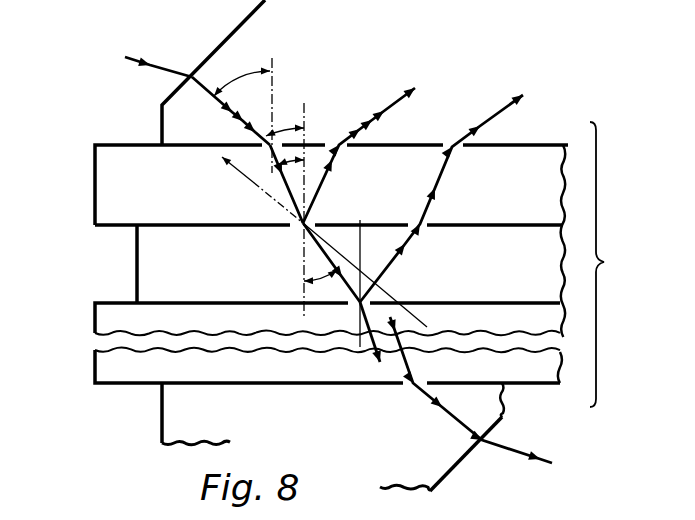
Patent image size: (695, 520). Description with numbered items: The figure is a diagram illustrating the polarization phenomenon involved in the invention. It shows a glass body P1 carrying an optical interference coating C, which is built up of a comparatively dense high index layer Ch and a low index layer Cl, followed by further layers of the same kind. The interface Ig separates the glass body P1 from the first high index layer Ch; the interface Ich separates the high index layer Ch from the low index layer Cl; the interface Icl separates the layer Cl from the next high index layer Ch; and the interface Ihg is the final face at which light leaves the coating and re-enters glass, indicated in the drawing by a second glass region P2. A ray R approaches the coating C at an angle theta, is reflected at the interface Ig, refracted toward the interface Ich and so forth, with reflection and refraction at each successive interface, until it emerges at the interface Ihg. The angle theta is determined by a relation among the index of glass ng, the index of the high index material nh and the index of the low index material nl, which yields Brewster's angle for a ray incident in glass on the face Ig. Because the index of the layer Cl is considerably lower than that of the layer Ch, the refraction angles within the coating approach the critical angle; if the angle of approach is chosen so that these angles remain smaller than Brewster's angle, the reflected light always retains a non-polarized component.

The ray R is at (179, 68).
The index of glass ng is at (333, 245).
The index of high index material nh is at (129, 185).
The index of low index material nl is at (154, 264).
The high index layer Ch is at (96, 182).
The low index layer Cl is at (146, 255).
The interface between glass body and high index layer Ig is at (558, 127).
The interface between high index layer and low index layer Ich is at (525, 208).
The interface between low index layer and high index layer Icl is at (505, 288).
The interface between high index layer and glass Ihg is at (465, 378).
The optical interference coating C is at (609, 264).
The glass body P1 is at (279, 77).
The second incidence point P2 is at (356, 375).